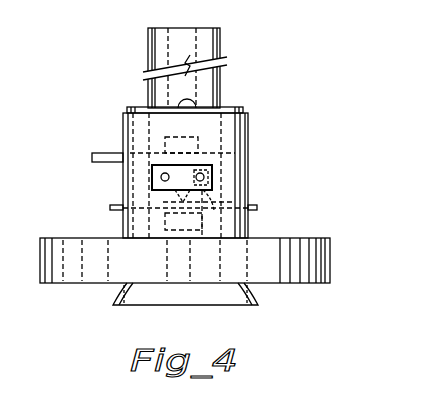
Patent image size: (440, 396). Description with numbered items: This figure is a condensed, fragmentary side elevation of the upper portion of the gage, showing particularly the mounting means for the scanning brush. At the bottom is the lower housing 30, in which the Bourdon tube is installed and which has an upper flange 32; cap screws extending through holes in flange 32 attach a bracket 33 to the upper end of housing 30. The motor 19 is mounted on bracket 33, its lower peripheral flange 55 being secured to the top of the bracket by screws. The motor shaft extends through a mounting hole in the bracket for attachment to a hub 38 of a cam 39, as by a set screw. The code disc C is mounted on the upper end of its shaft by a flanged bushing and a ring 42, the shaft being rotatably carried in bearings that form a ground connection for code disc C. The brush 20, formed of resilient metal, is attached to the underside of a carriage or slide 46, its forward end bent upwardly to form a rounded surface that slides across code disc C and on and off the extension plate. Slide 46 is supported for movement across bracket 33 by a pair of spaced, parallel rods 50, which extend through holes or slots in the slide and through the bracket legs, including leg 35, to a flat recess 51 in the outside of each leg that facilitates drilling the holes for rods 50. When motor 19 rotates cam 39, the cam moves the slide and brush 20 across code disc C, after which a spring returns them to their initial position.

The motor 19 is at (150, 43).
The lower peripheral flange 55 is at (135, 108).
The bracket 33 is at (238, 128).
The bracket leg 35 is at (250, 147).
The cam 39 is at (97, 153).
The hub 38 is at (193, 137).
The rods 50 is at (161, 177).
The flat recess 51 is at (213, 185).
The brush 20 is at (180, 195).
The slide 46 is at (195, 224).
The code disc C is at (268, 207).
The upper flange 32 is at (318, 240).
The ring 42 is at (162, 260).
The lower housing 30 is at (250, 293).